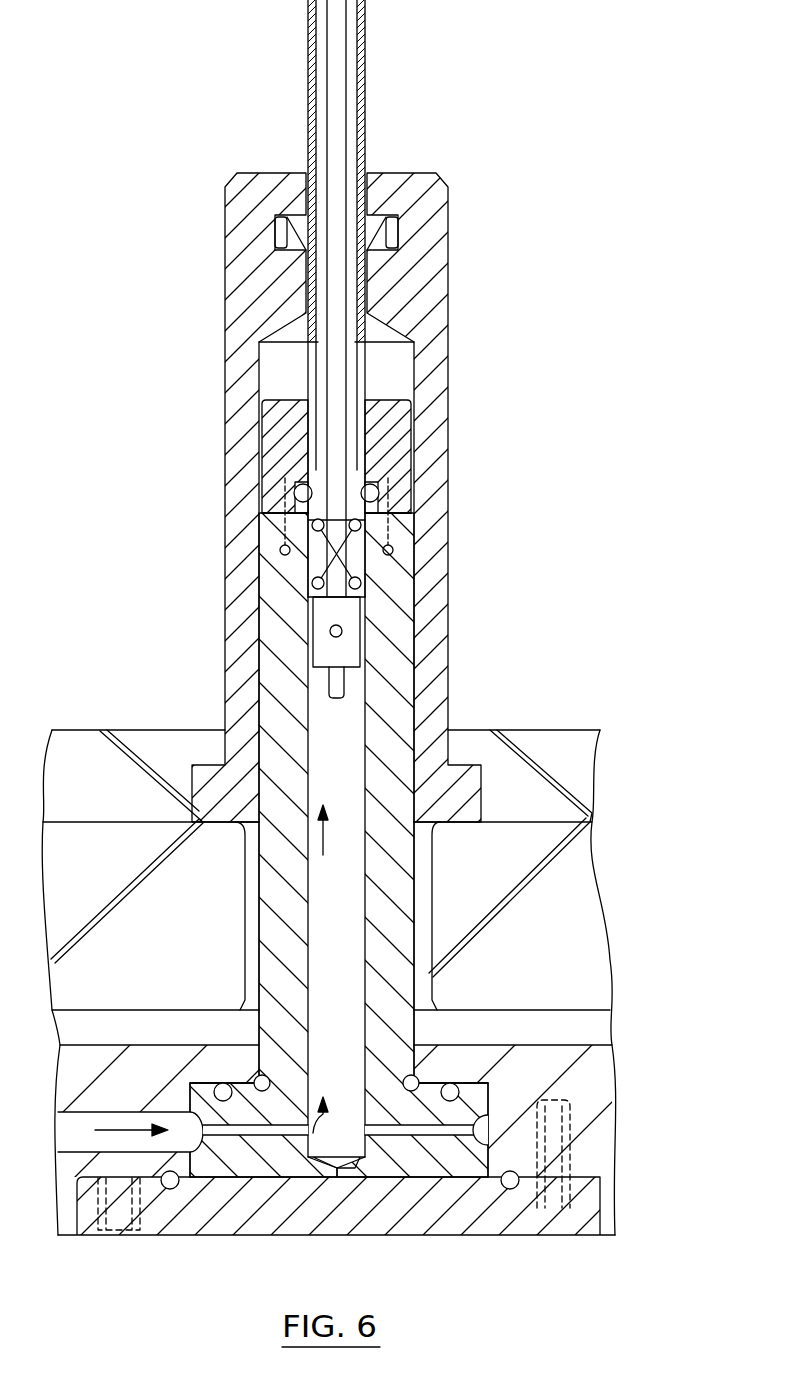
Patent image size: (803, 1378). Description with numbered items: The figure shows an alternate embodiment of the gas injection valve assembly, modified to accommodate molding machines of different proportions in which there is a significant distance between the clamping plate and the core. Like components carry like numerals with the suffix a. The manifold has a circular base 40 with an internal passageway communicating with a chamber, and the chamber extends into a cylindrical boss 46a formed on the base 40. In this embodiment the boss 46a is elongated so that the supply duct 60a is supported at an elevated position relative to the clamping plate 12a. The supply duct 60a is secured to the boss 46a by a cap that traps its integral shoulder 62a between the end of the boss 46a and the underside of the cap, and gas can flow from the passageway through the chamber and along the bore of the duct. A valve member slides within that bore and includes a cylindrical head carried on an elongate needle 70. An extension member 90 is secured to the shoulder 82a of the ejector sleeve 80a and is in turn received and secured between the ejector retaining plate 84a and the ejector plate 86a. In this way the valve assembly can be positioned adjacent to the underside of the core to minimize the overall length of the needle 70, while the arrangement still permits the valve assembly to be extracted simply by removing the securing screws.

The clamping plate 12a is at (598, 1077).
The circular base 40 is at (427, 1160).
The boss 46a is at (400, 883).
The supply duct 60a is at (357, 460).
The shoulder 62a is at (400, 515).
The needle 70 is at (335, 373).
The ejector sleeve 80a is at (308, 112).
The shoulder 82a is at (277, 243).
The ejector retaining plate 84a is at (100, 730).
The ejector plate 86a is at (251, 916).
The extension member 90 is at (440, 650).